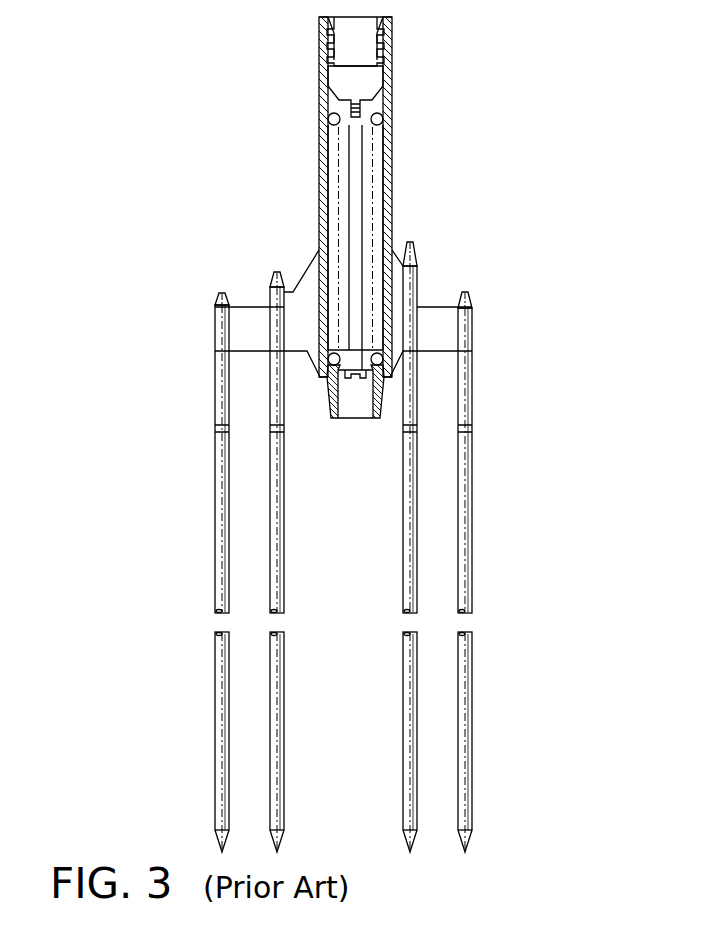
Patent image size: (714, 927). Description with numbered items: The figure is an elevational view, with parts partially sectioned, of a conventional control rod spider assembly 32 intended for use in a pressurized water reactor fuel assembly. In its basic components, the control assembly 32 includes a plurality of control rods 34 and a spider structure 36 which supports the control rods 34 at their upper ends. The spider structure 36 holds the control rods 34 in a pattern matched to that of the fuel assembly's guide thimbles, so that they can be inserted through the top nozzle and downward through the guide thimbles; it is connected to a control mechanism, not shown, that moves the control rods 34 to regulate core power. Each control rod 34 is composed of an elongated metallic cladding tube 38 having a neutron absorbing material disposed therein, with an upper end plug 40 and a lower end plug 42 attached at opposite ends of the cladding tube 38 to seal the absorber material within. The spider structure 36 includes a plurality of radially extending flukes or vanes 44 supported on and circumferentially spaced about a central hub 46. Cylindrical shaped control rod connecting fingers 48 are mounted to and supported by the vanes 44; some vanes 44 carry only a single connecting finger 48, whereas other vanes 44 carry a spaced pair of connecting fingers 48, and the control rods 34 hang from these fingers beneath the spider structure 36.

The control rod spider assembly 32 is at (472, 222).
The control rods 34 is at (215, 563).
The spider structure 36 is at (395, 162).
The cladding tube 38 is at (493, 698).
The upper end plug 40 is at (215, 392).
The lower end plug 42 is at (214, 840).
The vanes 44 is at (247, 290).
The central hub 46 is at (318, 182).
The connecting fingers 48 is at (215, 333).